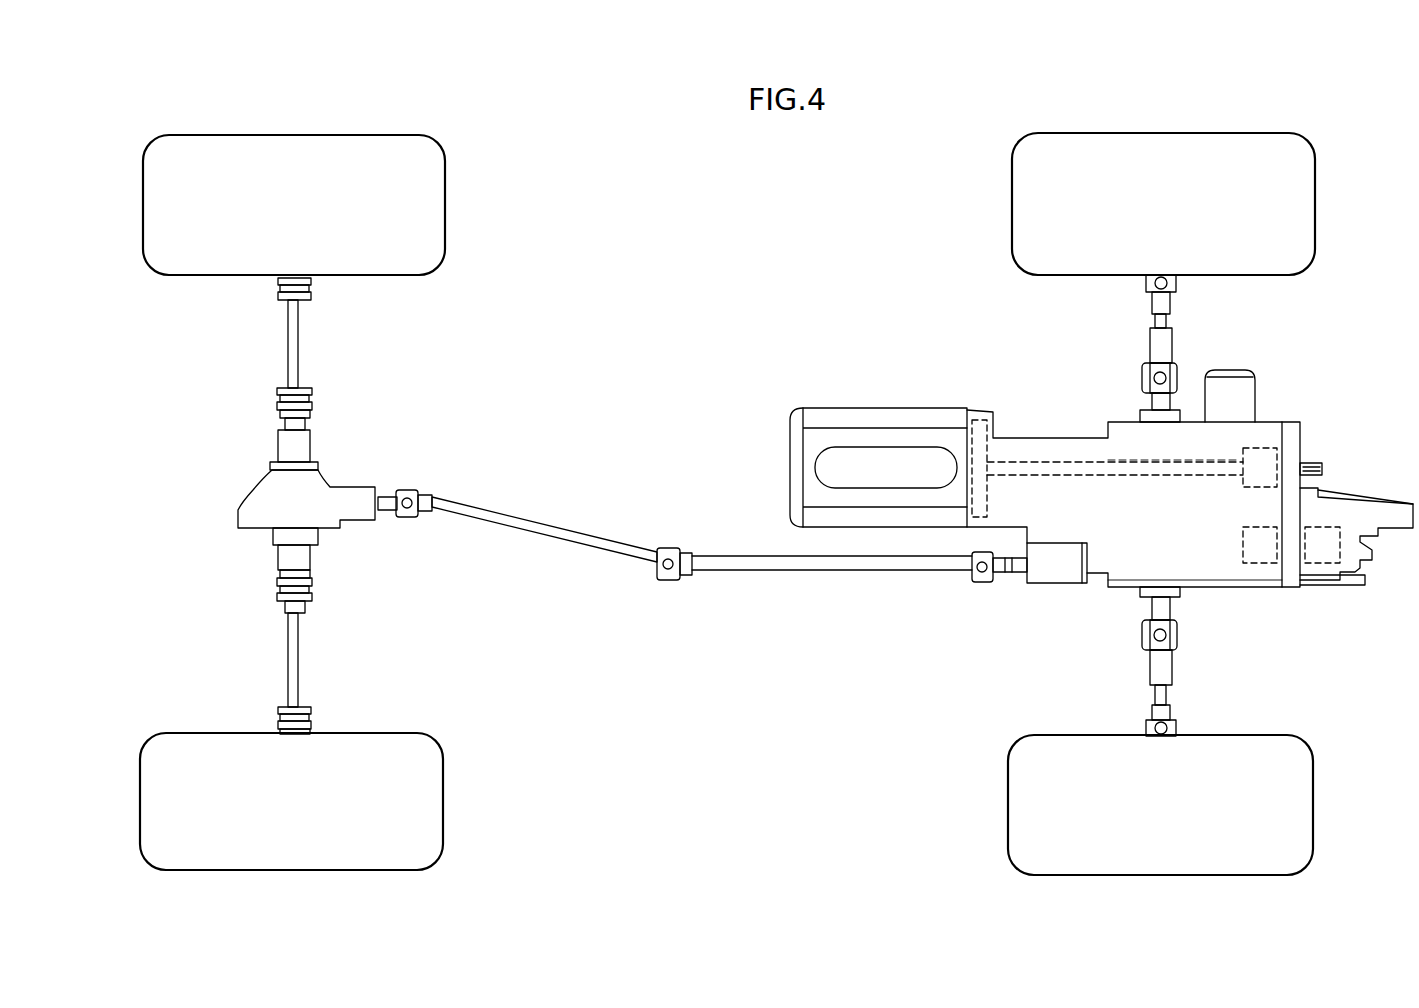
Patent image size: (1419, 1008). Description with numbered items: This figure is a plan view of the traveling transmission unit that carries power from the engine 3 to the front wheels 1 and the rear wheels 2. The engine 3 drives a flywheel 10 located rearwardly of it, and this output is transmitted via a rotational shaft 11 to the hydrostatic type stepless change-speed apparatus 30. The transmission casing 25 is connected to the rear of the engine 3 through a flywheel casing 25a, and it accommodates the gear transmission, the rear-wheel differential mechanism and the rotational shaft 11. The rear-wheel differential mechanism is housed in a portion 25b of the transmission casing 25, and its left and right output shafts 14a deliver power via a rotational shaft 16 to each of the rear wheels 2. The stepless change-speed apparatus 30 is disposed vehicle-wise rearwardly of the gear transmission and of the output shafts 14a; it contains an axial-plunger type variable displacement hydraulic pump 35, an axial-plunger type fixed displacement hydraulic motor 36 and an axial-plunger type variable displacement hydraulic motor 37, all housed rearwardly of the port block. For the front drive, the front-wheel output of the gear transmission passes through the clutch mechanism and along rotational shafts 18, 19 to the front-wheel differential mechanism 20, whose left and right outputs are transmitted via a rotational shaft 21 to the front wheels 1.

The front wheels 1 is at (433, 213).
The rear wheels 2 is at (1022, 204).
The engine 3 is at (890, 418).
The flywheel 10 is at (987, 490).
The rotational shaft 11 is at (1112, 472).
The output shafts 14a is at (1168, 413).
The rotational shaft 16 is at (1150, 318).
The rotational shaft 18 is at (765, 573).
The rotational shaft 19 is at (540, 540).
The front-wheel differential mechanism 20 is at (253, 482).
The rotational shaft 21 is at (300, 347).
The transmission casing 25 is at (1072, 435).
The flywheel casing 25a is at (996, 412).
The portion of transmission casing 25b is at (1273, 583).
The hydrostatic type stepless change-speed apparatus 30 is at (1352, 490).
The variable displacement hydraulic pump 35 is at (1262, 447).
The fixed displacement hydraulic motor 36 is at (1262, 578).
The variable displacement hydraulic motor 37 is at (1326, 572).